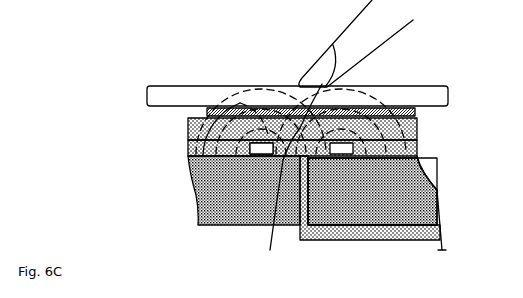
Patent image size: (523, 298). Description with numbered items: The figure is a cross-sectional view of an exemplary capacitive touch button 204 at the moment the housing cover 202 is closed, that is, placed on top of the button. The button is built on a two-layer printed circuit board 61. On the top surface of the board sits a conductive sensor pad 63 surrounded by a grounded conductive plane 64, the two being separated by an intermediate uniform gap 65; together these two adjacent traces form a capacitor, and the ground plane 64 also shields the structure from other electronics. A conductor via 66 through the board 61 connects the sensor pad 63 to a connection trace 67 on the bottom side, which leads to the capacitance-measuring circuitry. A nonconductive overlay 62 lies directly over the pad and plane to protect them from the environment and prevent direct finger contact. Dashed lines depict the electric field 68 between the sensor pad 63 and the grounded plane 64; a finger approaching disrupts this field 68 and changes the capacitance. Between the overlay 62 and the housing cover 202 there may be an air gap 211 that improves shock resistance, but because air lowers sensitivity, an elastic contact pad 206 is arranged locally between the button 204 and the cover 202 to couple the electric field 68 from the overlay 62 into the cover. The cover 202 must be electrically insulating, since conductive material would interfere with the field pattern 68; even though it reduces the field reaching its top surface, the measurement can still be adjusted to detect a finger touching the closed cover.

The printed circuit board 61 is at (217, 210).
The nonconductive overlay 62 is at (417, 137).
The sensor pad 63 is at (290, 178).
The grounded conductive plane 64 is at (418, 151).
The gap 65 is at (260, 156).
The conductor via 66 is at (303, 180).
The connection trace 67 is at (337, 236).
The electric field 68 is at (357, 80).
The housing cover 202 is at (440, 90).
The capacitive touch button 204 is at (180, 135).
The elastic contact pad 206 is at (240, 106).
The air gap 211 is at (196, 113).